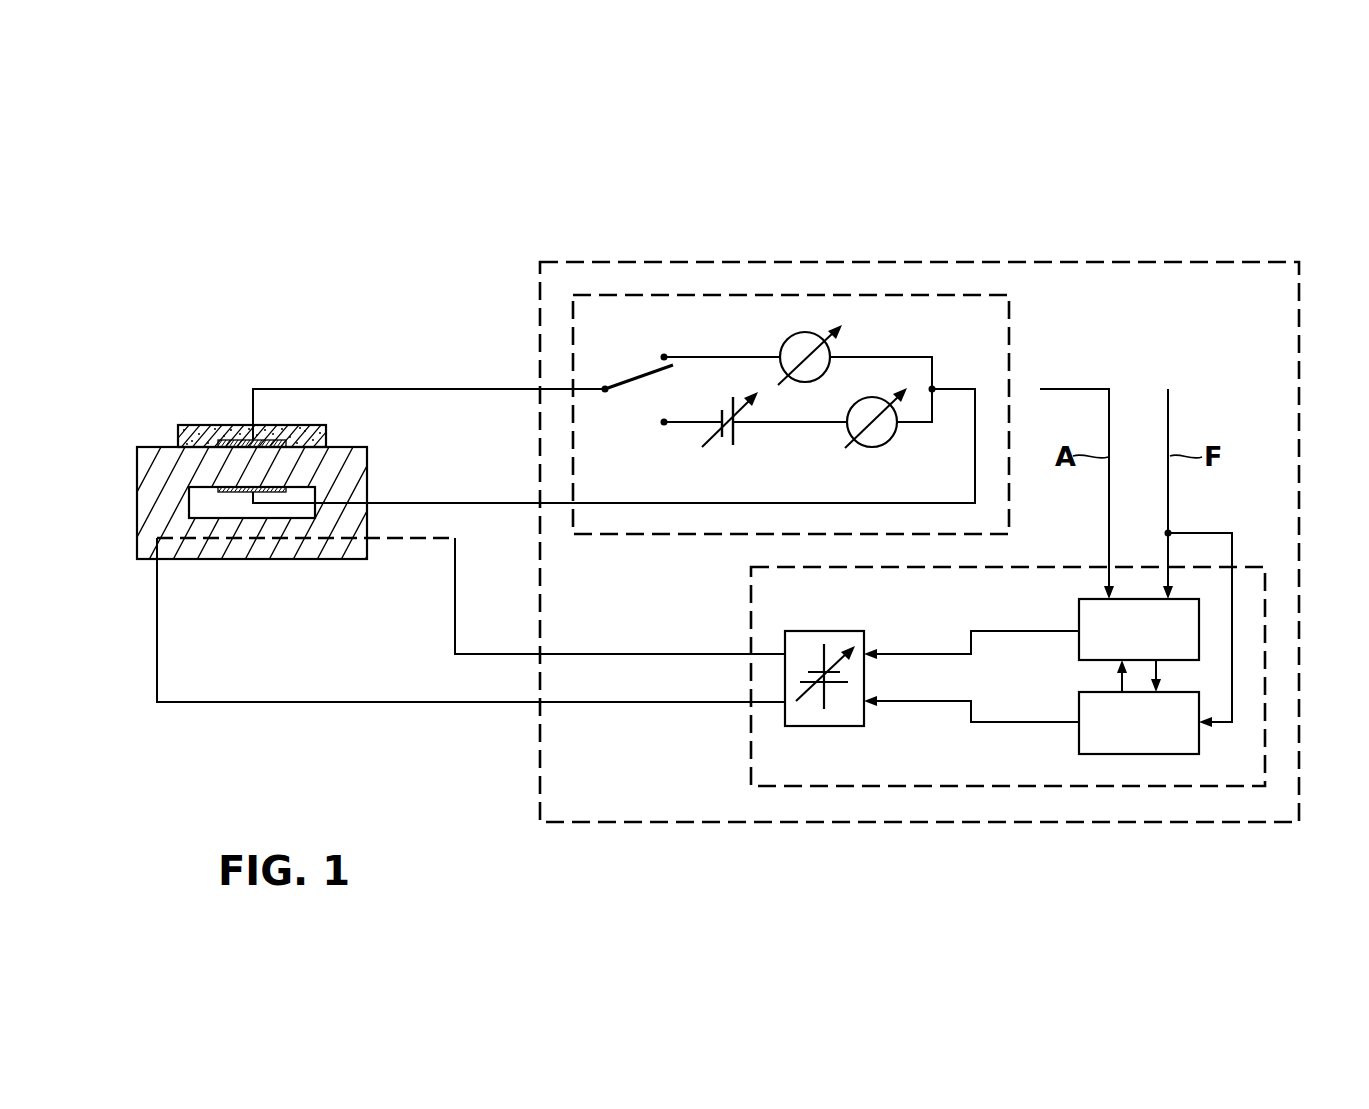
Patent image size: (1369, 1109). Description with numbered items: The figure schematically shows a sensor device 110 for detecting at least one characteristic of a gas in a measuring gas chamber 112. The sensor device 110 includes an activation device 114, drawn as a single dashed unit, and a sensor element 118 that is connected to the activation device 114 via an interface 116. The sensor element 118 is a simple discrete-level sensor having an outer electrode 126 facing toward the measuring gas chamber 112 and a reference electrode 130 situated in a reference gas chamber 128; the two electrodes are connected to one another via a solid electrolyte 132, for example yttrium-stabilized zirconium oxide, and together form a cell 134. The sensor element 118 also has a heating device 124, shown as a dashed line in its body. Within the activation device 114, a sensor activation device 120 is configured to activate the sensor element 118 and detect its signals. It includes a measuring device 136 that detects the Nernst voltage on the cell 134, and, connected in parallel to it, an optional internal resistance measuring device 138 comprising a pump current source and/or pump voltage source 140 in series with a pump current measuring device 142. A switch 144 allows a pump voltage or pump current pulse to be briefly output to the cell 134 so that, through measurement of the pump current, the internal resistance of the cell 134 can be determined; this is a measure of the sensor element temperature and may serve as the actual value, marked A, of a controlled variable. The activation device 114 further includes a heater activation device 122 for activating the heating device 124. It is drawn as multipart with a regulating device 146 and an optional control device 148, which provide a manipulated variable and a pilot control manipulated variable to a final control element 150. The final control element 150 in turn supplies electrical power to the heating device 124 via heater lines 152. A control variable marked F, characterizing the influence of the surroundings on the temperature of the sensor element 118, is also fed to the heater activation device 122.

The sensor device 110 is at (1266, 178).
The measuring gas chamber 112 is at (150, 288).
The activation device 114 is at (628, 824).
The interface 116 is at (466, 358).
The sensor element 118 is at (239, 456).
The sensor activation device 120 is at (1010, 322).
The heater activation device 122 is at (973, 788).
The heating device 124 is at (248, 543).
The outer electrode 126 is at (223, 422).
The reference gas chamber 128 is at (188, 503).
The reference electrode 130 is at (207, 512).
The solid electrolyte 132 is at (163, 487).
The cell 134 is at (168, 464).
The measuring device 136 is at (786, 343).
The internal resistance measuring device 138 is at (842, 391).
The pump current source and/or pump voltage source 140 is at (738, 431).
The pump current measuring device 142 is at (896, 432).
The switch 144 is at (637, 383).
The regulating device 146 is at (1160, 646).
The control device 148 is at (1160, 739).
The final control element 150 is at (844, 708).
The heater line 152 is at (620, 702).